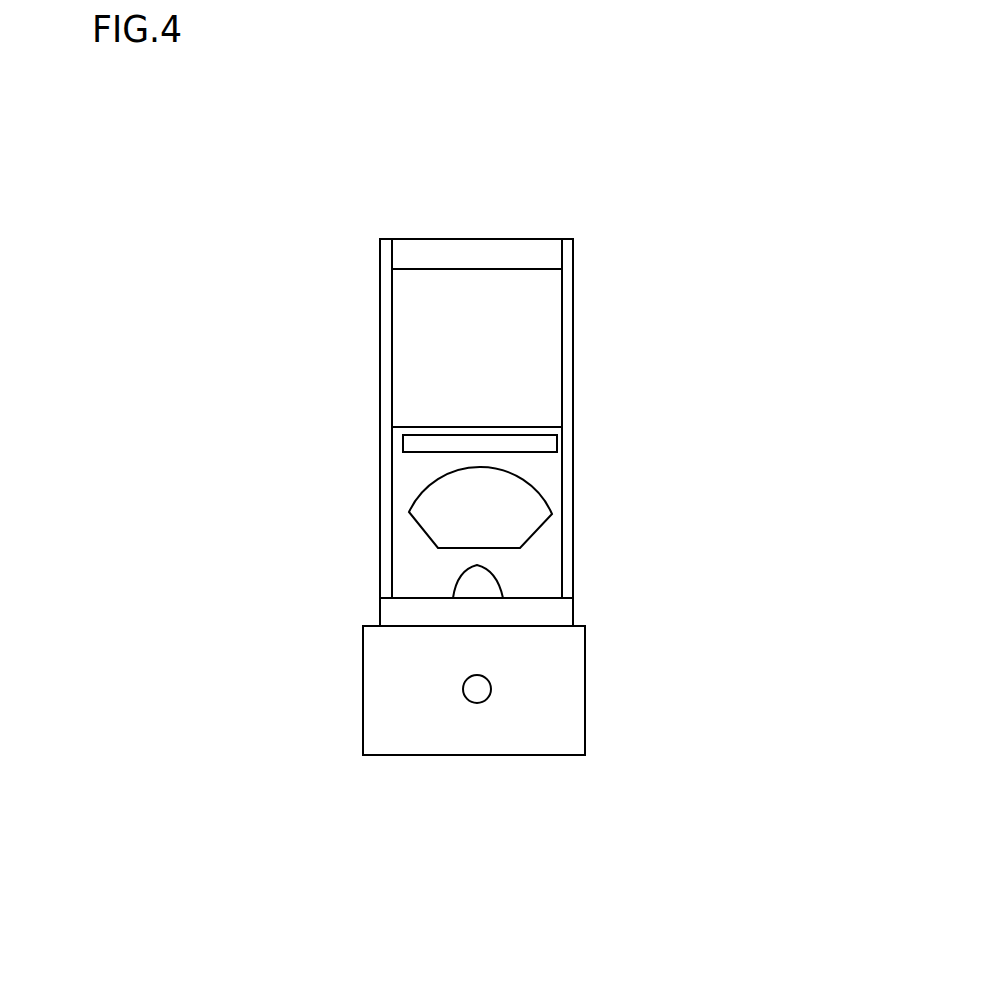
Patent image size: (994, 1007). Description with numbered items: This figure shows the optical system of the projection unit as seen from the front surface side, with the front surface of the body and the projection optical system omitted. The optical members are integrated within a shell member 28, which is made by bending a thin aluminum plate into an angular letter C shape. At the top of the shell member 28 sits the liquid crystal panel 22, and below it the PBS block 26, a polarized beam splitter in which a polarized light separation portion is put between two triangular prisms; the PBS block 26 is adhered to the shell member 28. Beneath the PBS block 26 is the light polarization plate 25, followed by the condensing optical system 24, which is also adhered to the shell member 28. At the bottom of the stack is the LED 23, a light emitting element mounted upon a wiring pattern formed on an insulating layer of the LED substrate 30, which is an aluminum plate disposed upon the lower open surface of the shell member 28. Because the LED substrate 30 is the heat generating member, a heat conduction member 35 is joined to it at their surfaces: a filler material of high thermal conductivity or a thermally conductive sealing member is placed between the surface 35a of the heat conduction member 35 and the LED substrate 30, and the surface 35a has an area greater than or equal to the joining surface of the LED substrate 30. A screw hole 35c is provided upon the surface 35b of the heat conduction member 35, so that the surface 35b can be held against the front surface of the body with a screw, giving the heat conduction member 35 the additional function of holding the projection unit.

The liquid crystal panel 22 is at (454, 250).
The LED 23 is at (477, 585).
The condensing optical system 24 is at (448, 513).
The light polarization plate 25 is at (523, 444).
The PBS block 26 is at (552, 283).
The shell member 28 is at (380, 292).
The LED substrate 30 is at (540, 615).
The heat conduction member 35 is at (562, 687).
The surface of the heat conduction member 35a is at (429, 637).
The surface of the heat conduction member 35b is at (385, 707).
The screw hole 35c is at (477, 697).